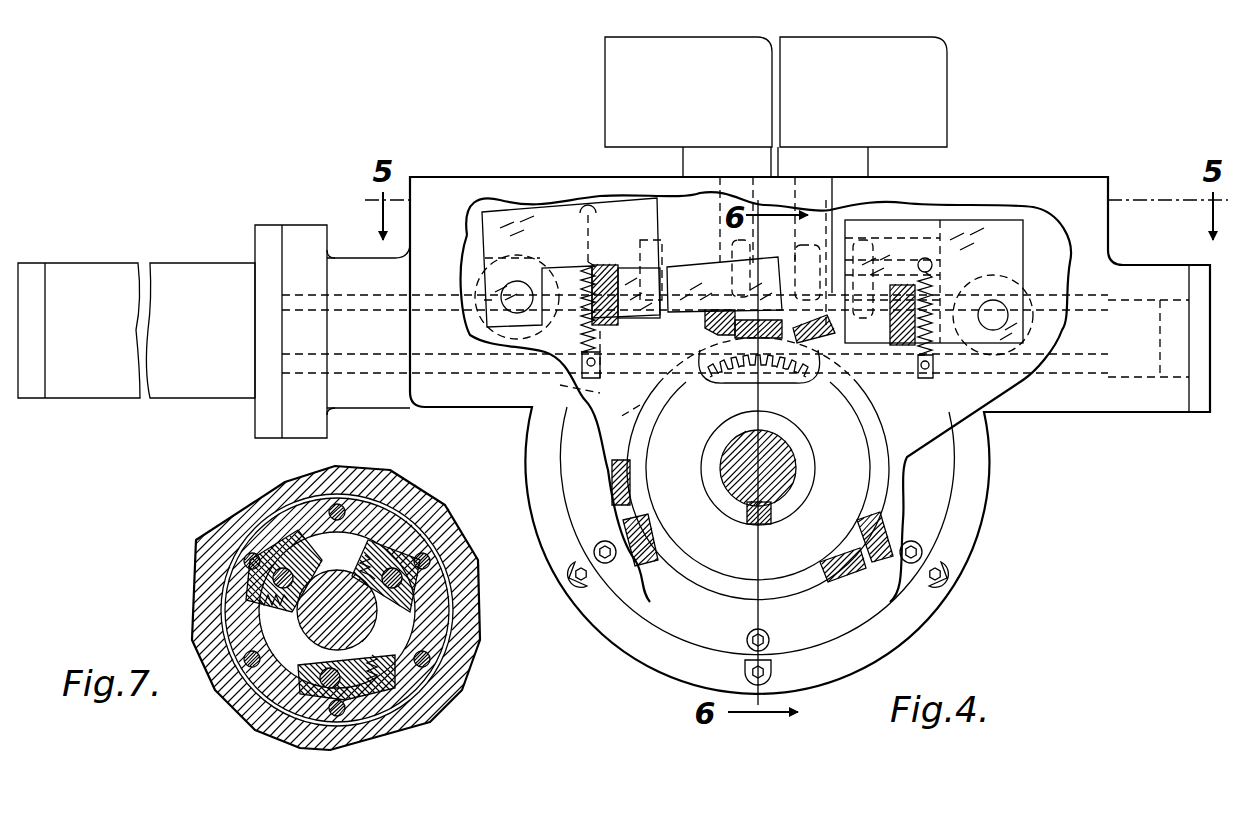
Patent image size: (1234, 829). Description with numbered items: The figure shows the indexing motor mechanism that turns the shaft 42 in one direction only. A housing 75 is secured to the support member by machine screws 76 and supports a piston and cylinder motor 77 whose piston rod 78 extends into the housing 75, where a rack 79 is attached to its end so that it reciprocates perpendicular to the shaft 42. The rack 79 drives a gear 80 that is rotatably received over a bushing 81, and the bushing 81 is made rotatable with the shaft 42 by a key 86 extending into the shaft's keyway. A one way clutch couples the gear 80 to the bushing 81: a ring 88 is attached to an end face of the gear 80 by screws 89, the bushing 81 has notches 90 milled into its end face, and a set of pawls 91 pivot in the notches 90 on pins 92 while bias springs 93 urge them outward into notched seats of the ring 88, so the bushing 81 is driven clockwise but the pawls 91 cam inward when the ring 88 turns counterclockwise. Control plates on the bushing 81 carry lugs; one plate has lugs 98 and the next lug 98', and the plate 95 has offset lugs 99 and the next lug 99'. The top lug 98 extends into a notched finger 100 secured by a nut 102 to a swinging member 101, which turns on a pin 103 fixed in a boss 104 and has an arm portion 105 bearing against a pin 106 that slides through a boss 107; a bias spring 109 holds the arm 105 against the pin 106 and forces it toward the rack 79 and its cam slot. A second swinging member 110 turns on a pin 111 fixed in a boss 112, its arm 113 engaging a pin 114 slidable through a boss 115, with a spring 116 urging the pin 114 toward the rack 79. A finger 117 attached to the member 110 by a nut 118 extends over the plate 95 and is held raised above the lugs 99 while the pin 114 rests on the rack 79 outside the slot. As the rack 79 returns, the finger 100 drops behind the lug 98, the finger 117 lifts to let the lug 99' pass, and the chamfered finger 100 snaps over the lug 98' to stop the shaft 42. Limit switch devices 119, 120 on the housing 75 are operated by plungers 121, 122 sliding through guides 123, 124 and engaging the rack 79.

In FIG. 4, the shaft 42 is at (764, 473).
In FIG. 7, the shaft 42 is at (338, 630).
In FIG. 4, the housing 75 is at (983, 545).
In FIG. 7, the housing 75 is at (470, 550).
In FIG. 4, the machine screws 76 is at (940, 582).
In FIG. 4, the piston and cylinder motor 77 is at (190, 262).
In FIG. 4, the piston rod 78 is at (355, 298).
In FIG. 4, the rack 79 is at (665, 376).
In FIG. 4, the gear 80 is at (728, 366).
In FIG. 4, the bushing 81 is at (804, 497).
In FIG. 4, the key 86 is at (750, 518).
In FIG. 7, the ring 88 is at (448, 625).
In FIG. 7, the screws 89 is at (440, 670).
In FIG. 7, the notches 90 is at (300, 690).
In FIG. 7, the pawls 91 is at (255, 590).
In FIG. 7, the pins 92 is at (284, 566).
In FIG. 7, the bias springs 93 is at (380, 548).
In FIG. 4, the control plate 95 is at (884, 423).
In FIG. 4, the lug 98 is at (732, 335).
In FIG. 4, the next lug 98' is at (641, 562).
In FIG. 4, the lugs 99 is at (723, 410).
In FIG. 4, the next lug 99' is at (590, 480).
In FIG. 4, the notched finger 100 is at (705, 318).
In FIG. 4, the swinging member 101 is at (1023, 265).
In FIG. 4, the nut 102 is at (905, 360).
In FIG. 4, the pin 103 is at (1030, 334).
In FIG. 4, the boss 104 is at (1010, 322).
In FIG. 4, the arm portion 105 is at (895, 232).
In FIG. 4, the pin 106 is at (866, 240).
In FIG. 4, the boss 107 is at (925, 258).
In FIG. 4, the bias spring 109 is at (935, 352).
In FIG. 4, the second swinging member 110 is at (482, 258).
In FIG. 4, the pin 111 is at (502, 304).
In FIG. 4, the boss 112 is at (478, 290).
In FIG. 4, the arm 113 is at (548, 212).
In FIG. 4, the pin 114 is at (660, 240).
In FIG. 4, the boss 115 is at (662, 262).
In FIG. 4, the spring 116 is at (582, 322).
In FIG. 4, the finger 117 is at (752, 268).
In FIG. 4, the nut 118 is at (612, 322).
In FIG. 4, the limit switch device 119 is at (668, 106).
In FIG. 4, the limit switch device 120 is at (842, 106).
In FIG. 4, the plunger 121 is at (730, 274).
In FIG. 4, the plunger 122 is at (808, 250).
In FIG. 4, the guide 123 is at (718, 186).
In FIG. 4, the guide 124 is at (793, 195).